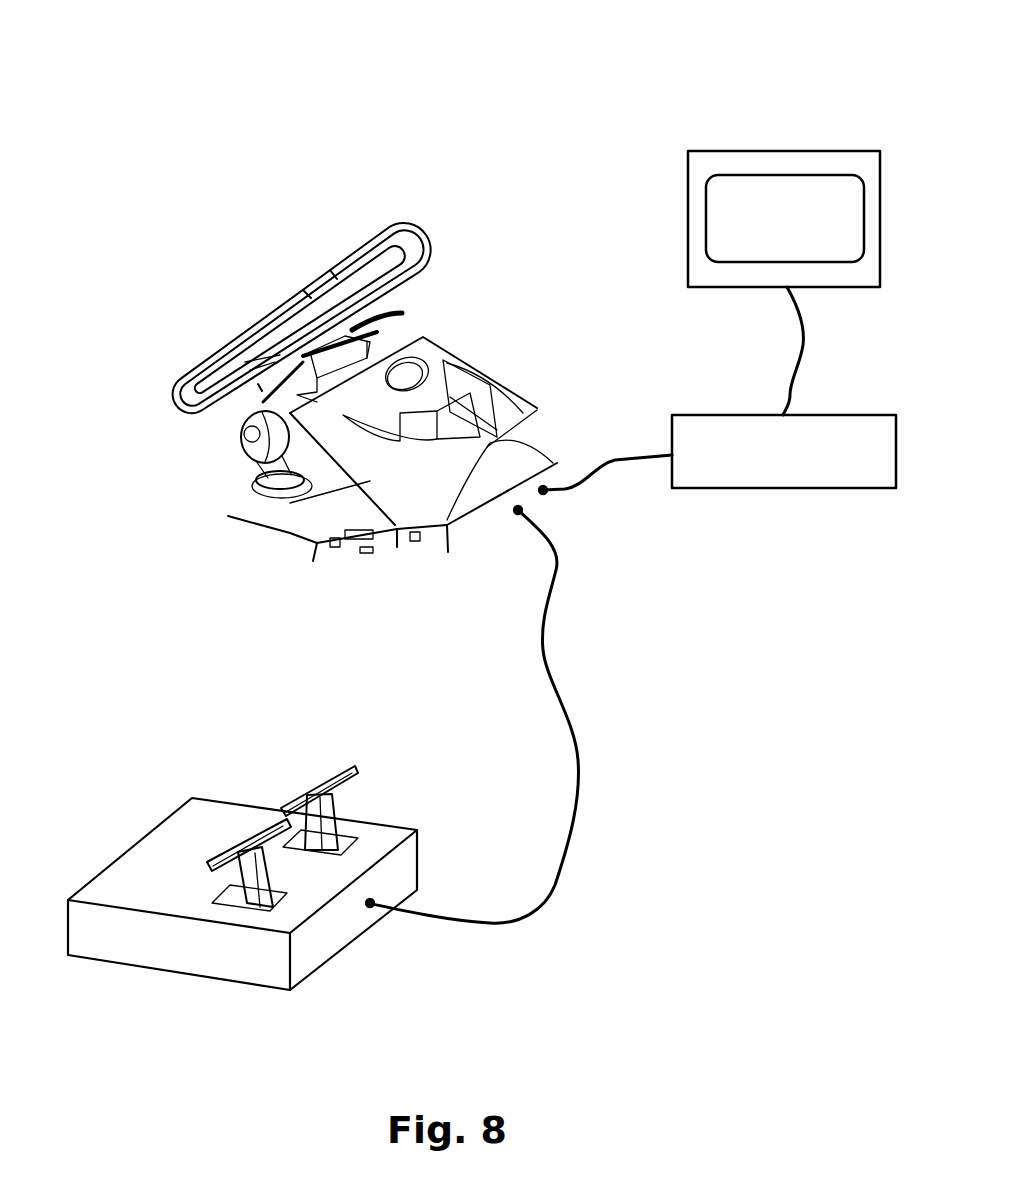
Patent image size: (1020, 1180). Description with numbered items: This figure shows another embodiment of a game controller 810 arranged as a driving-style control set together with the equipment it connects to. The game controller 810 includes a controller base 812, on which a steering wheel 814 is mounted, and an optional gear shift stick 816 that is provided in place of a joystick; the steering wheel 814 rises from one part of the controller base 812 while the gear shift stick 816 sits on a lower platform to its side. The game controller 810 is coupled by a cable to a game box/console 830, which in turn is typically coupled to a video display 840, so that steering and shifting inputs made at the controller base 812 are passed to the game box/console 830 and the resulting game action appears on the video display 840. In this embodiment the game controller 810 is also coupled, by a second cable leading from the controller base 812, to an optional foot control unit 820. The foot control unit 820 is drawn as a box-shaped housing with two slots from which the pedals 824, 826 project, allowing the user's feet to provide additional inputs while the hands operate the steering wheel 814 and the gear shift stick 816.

The game controller 810 is at (450, 334).
The controller base 812 is at (555, 466).
The steering wheel 814 is at (230, 330).
The gear shift stick 816 is at (242, 447).
The foot control unit 820 is at (364, 950).
The pedal 824 is at (252, 830).
The pedal 826 is at (340, 770).
The game box/console 830 is at (798, 510).
The video display 840 is at (760, 126).